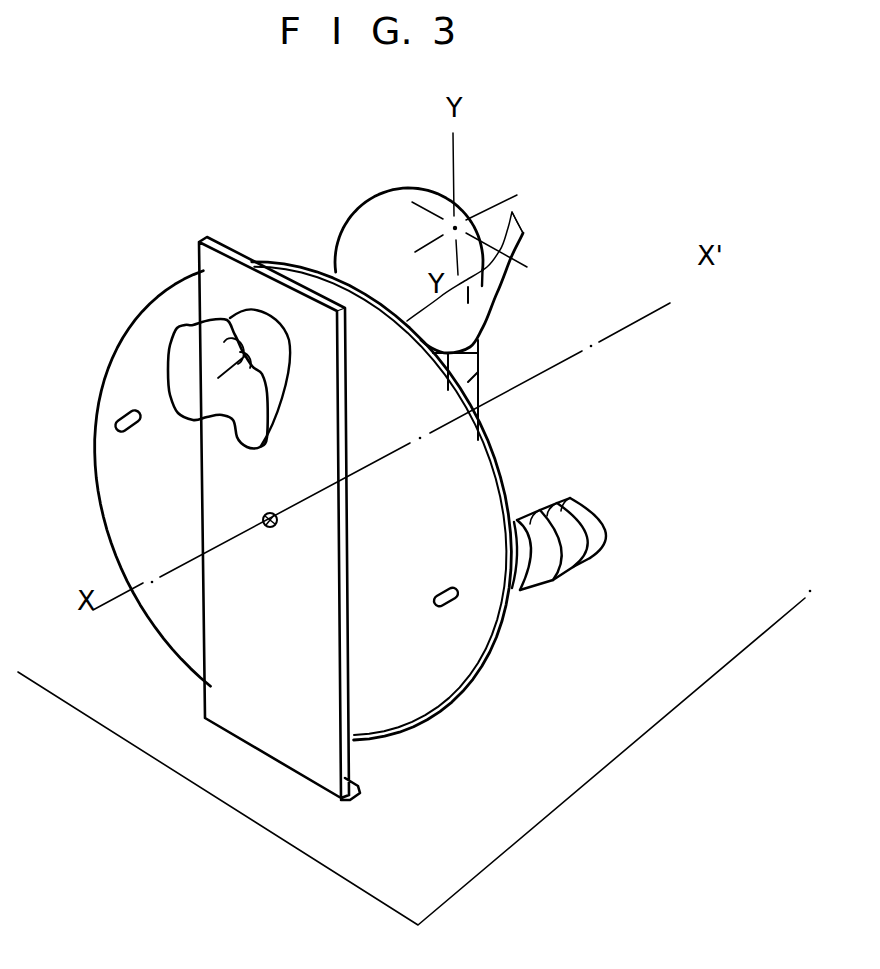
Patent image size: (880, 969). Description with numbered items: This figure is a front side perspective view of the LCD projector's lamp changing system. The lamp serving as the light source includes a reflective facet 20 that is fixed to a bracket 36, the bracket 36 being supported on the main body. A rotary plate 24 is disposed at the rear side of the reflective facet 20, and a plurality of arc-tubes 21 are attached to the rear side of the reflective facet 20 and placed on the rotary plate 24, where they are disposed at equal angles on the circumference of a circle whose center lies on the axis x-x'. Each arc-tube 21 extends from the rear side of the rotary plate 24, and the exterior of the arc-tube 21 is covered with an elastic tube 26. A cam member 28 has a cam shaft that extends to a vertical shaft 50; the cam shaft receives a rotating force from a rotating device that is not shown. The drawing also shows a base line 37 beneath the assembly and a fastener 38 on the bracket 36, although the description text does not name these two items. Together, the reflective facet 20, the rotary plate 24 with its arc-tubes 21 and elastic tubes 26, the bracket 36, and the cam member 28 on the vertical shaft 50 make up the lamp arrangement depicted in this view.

The reflective facet 20 is at (182, 347).
The arc-tube 21 is at (117, 426).
The rotary plate 24 is at (438, 683).
The elastic tube 26 is at (578, 563).
The cam member 28 is at (394, 189).
The bracket 36 is at (258, 725).
The base 37 is at (602, 745).
The screw 38 is at (265, 530).
The vertical shaft 50 is at (479, 367).